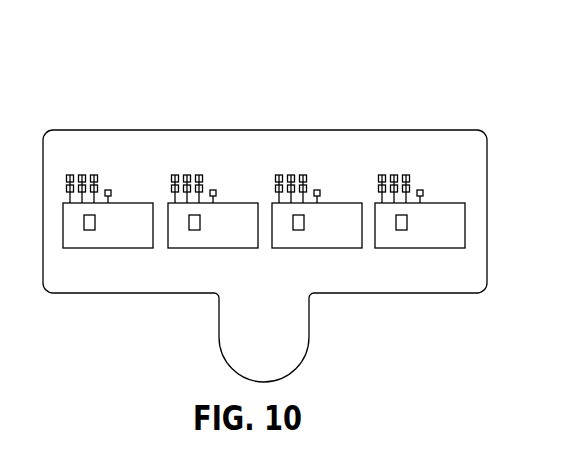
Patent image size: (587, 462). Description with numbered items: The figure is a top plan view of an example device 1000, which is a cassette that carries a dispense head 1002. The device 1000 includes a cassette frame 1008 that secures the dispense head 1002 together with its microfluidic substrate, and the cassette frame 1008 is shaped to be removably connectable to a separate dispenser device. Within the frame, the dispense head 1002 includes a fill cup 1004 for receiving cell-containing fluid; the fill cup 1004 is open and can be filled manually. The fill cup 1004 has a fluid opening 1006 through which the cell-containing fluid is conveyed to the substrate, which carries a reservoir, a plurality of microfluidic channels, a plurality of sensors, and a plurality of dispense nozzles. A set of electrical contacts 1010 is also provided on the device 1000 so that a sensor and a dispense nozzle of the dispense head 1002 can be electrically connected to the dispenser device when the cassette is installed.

The device 1000 is at (108, 106).
The dispense head 1002 is at (422, 153).
The fill cup 1004 is at (437, 222).
The fluid opening 1006 is at (400, 228).
The cassette frame 1008 is at (388, 278).
The set of electrical contacts 1010 is at (387, 168).